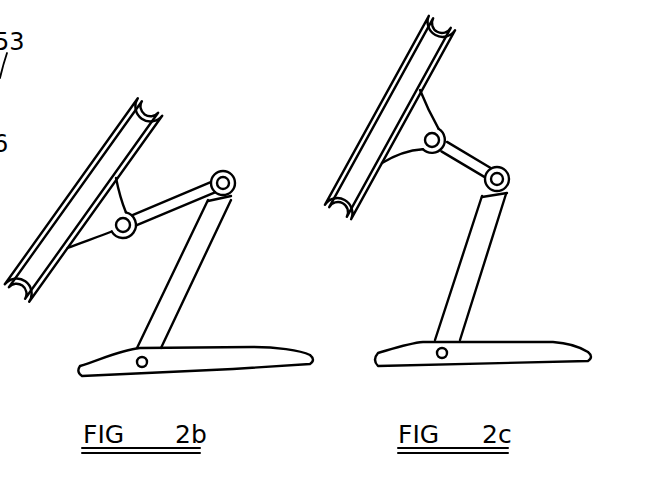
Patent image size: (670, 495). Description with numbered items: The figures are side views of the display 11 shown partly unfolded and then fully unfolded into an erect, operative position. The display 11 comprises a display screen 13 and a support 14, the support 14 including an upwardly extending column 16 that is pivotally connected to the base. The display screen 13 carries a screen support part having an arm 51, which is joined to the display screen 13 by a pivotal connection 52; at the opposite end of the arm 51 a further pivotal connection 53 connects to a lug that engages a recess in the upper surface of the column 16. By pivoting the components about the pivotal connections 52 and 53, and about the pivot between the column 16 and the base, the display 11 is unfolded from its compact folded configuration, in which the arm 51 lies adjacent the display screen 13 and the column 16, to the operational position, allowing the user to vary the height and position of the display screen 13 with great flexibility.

In FIG. 2B, the display 11 is at (86, 333).
In FIG. 2C, the display 11 is at (412, 240).
In FIG. 2B, the display screen 13 is at (128, 110).
In FIG. 2C, the display screen 13 is at (396, 84).
In FIG. 2B, the support 14 is at (230, 369).
In FIG. 2C, the support 14 is at (507, 340).
In FIG. 2B, the column 16 is at (193, 283).
In FIG. 2C, the column 16 is at (487, 258).
In FIG. 2B, the arm 51 is at (192, 184).
In FIG. 2C, the arm 51 is at (472, 150).
In FIG. 2B, the pivotal connection 52 is at (127, 212).
In FIG. 2C, the pivotal connection 52 is at (440, 126).
In FIG. 2B, the pivotal connection 53 is at (233, 176).
In FIG. 2C, the pivotal connection 53 is at (501, 168).